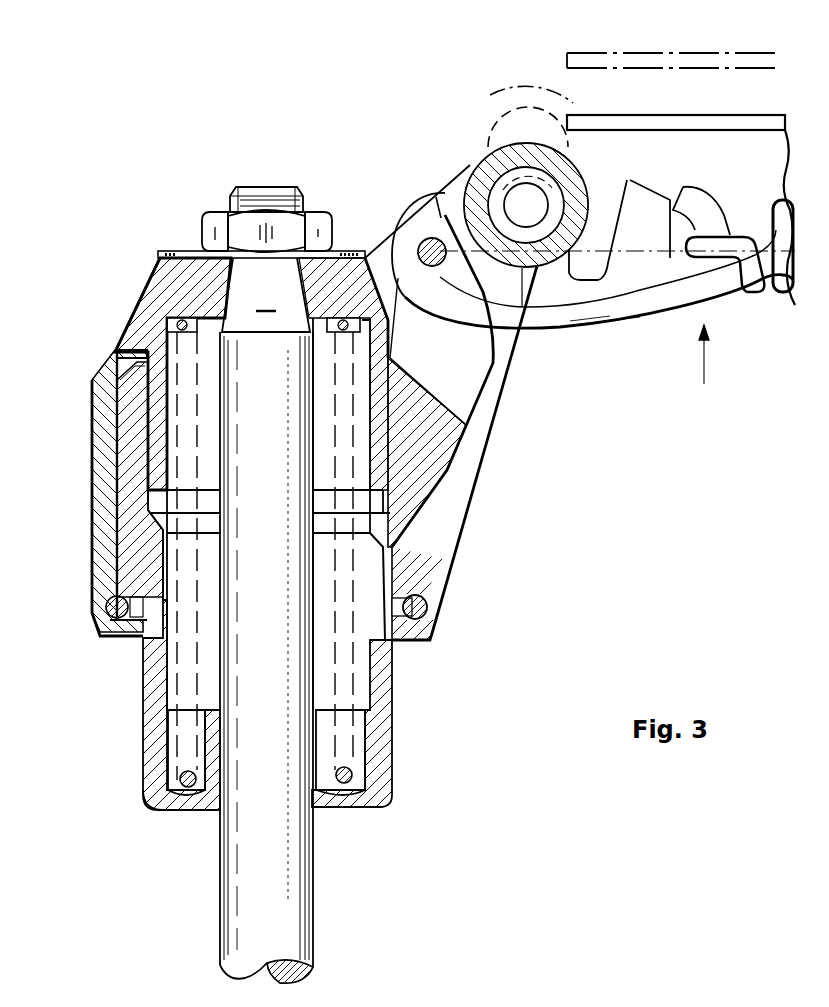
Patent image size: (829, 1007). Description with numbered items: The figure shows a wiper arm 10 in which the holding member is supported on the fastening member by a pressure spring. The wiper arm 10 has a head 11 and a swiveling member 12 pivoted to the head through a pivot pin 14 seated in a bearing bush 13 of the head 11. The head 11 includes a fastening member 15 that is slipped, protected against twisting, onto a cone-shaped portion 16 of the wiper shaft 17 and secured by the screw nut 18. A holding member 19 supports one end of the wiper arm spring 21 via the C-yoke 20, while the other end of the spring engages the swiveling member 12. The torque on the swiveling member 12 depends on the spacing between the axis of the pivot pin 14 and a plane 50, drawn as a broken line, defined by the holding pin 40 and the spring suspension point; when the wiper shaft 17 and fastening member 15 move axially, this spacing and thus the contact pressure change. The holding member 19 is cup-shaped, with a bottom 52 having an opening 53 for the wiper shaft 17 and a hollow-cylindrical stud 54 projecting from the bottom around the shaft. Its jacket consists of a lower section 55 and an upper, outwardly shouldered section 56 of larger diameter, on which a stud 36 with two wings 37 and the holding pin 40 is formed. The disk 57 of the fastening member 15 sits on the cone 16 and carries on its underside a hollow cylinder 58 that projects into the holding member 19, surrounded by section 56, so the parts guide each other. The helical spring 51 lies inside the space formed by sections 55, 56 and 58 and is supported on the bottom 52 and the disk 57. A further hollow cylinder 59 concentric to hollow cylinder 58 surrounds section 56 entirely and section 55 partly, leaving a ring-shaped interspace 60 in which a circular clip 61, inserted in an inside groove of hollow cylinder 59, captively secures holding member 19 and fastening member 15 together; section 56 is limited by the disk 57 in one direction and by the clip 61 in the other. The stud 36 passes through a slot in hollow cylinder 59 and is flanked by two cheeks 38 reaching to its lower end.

The wiper arm 10 is at (704, 367).
The head 11 is at (375, 252).
The swiveling member 12 is at (700, 122).
The bearing bush 13 is at (518, 172).
The pivot pin 14 is at (526, 205).
The fastening member 15 is at (160, 256).
The portion of the wiper shaft 16 is at (266, 612).
The wiper shaft 17 is at (262, 210).
The screw nut 18 is at (214, 228).
The holding member 19 is at (399, 705).
The C-yoke 20 is at (633, 302).
The wiper arm spring 21 is at (770, 300).
The stud 36 is at (450, 466).
The wings 37 is at (455, 373).
The cheeks 38 is at (485, 426).
The holding pin 40 is at (434, 245).
The plane 50 is at (742, 248).
The helical spring 51 is at (185, 695).
The bottom 52 is at (158, 808).
The opening 53 is at (226, 778).
The hollow-cylindrical stud 54 is at (328, 768).
The section 55 is at (155, 748).
The section 56 is at (135, 410).
The disk 57 is at (160, 295).
The hollow cylinder 58 is at (148, 348).
The hollow cylinder 59 is at (105, 470).
The ring-shaped interspace 60 is at (128, 566).
The circular clip 61 is at (430, 606).